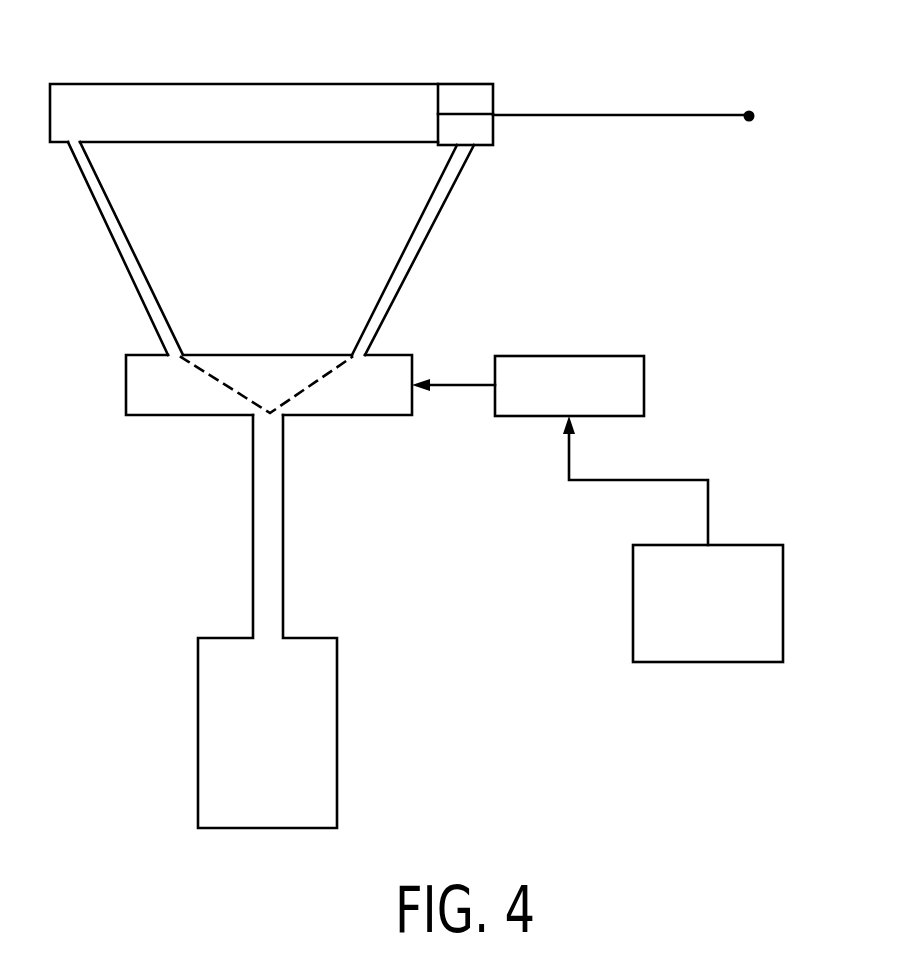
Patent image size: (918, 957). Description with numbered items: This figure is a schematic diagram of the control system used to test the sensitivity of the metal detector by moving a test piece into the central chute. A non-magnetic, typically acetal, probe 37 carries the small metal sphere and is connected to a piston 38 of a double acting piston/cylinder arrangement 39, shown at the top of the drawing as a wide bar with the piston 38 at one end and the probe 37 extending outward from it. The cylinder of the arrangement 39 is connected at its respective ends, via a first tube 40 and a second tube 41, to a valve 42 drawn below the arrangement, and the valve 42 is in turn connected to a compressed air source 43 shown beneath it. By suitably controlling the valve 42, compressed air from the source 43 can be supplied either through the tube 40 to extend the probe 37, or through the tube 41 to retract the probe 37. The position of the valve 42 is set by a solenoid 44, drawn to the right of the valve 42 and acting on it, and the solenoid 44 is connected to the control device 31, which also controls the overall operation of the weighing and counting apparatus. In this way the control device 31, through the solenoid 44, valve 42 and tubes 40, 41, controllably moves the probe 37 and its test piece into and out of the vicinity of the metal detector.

The control device 31 is at (783, 598).
The probe 37 is at (620, 115).
The piston 38 is at (437, 100).
The double acting piston/cylinder arrangement 39 is at (212, 84).
The tube 40 is at (142, 262).
The tube 41 is at (430, 232).
The valve 42 is at (126, 380).
The compressed air source 43 is at (337, 698).
The solenoid 44 is at (644, 382).